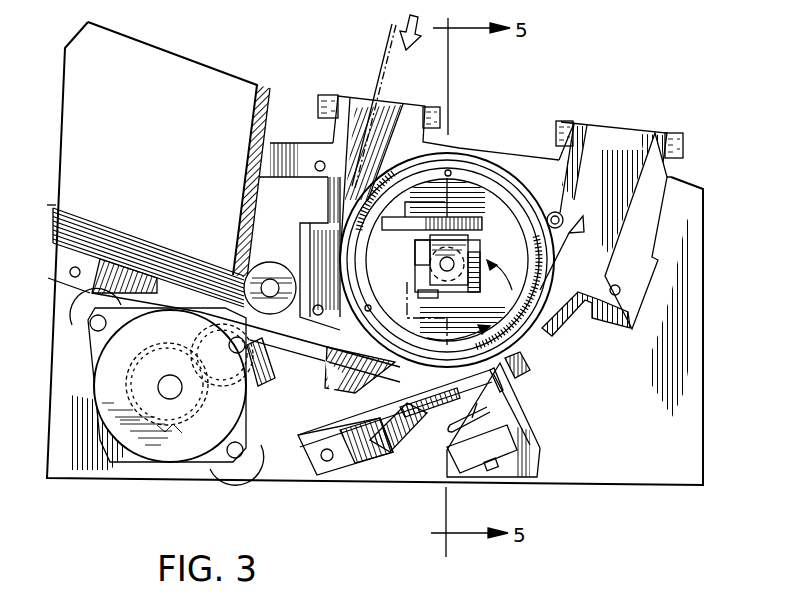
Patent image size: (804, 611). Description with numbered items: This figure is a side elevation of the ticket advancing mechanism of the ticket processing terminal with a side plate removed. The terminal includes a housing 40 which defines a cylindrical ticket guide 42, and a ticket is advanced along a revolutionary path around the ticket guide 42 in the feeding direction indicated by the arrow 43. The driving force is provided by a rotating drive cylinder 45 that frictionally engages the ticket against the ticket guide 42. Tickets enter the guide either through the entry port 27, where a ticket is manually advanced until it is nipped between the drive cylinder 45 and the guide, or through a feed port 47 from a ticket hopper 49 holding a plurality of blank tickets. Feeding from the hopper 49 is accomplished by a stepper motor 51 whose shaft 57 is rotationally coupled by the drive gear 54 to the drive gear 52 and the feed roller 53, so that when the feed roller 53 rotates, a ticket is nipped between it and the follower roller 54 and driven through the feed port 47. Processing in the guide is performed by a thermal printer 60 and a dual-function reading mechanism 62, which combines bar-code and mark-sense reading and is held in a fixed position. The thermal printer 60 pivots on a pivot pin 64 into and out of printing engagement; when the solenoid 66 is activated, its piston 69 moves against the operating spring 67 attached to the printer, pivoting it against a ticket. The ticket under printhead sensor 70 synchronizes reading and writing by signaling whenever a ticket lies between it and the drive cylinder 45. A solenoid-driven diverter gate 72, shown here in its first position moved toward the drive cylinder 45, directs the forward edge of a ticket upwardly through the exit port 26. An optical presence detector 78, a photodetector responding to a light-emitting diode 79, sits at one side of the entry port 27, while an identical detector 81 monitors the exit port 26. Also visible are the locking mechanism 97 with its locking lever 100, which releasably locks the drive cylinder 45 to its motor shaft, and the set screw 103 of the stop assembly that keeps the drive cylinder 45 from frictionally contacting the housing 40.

The exit port 26 is at (612, 134).
The entry port 27 is at (387, 110).
The housing 40 is at (72, 472).
The ticket guide 42 is at (472, 157).
The arrow 43 is at (465, 332).
The drive cylinder 45 is at (487, 184).
The feed port 47 is at (330, 374).
The ticket hopper 49 is at (220, 84).
The stepper motor 51 is at (157, 448).
The drive gear 52 is at (200, 327).
The feed roller 53 is at (240, 390).
The drive gear 54 is at (272, 262).
The shaft 57 is at (173, 392).
The thermal printer 60 is at (453, 397).
The dual-function reading mechanism 62 is at (542, 373).
The pivot pin 64 is at (330, 461).
The solenoid 66 is at (480, 460).
The operating spring 67 is at (450, 421).
The piston 69 is at (493, 468).
The ticket under printhead (TUP) sensor 70 is at (522, 372).
The diverter gate 72 is at (560, 217).
The optical presence detector 78 is at (336, 95).
The light-emitting diode 79 is at (440, 110).
The optical presence detector 81 is at (671, 137).
The locking mechanism 97 is at (463, 290).
The locking lever 100 is at (397, 229).
The set screw 103 is at (453, 262).